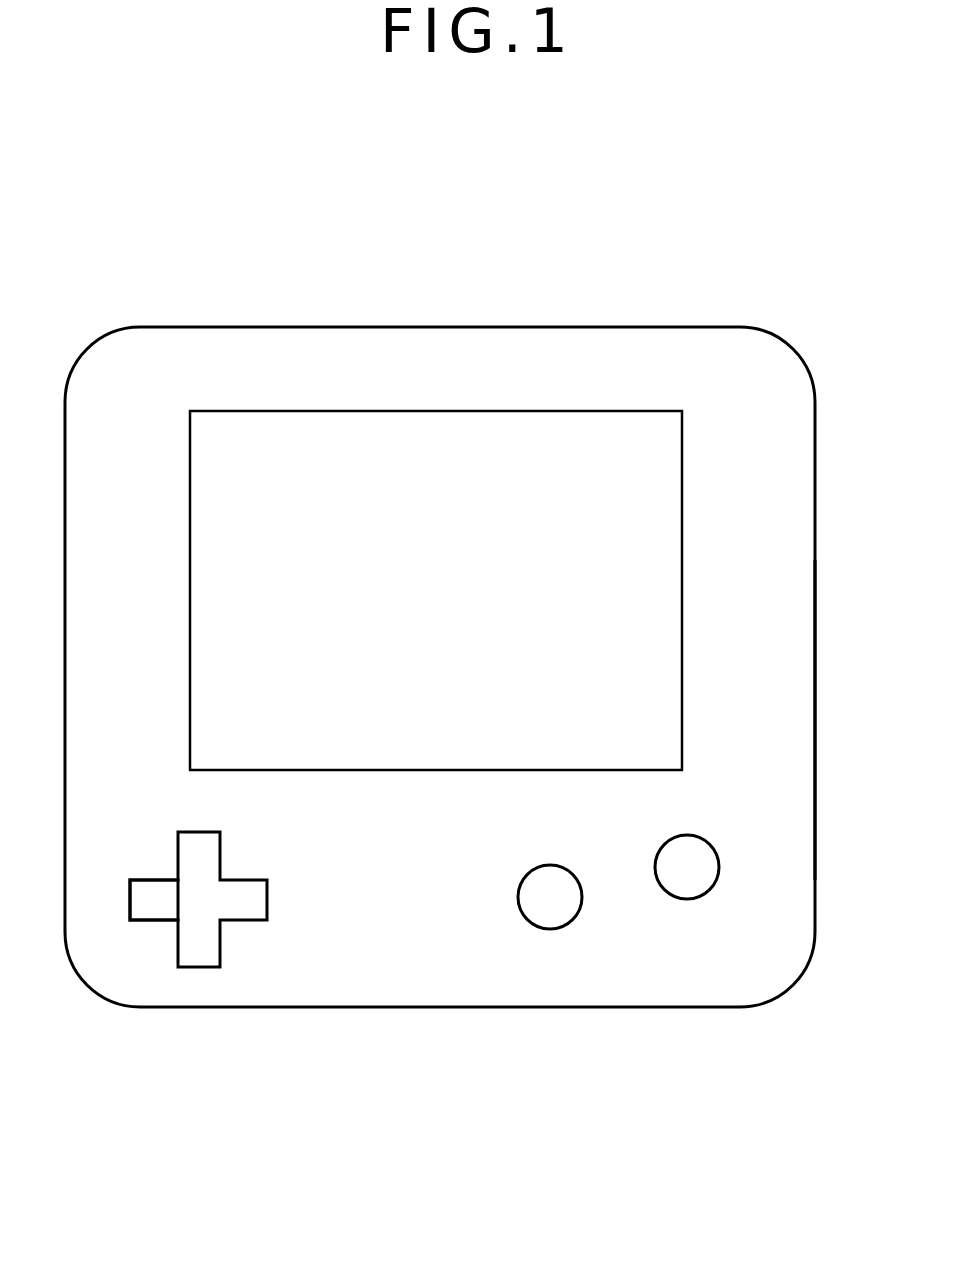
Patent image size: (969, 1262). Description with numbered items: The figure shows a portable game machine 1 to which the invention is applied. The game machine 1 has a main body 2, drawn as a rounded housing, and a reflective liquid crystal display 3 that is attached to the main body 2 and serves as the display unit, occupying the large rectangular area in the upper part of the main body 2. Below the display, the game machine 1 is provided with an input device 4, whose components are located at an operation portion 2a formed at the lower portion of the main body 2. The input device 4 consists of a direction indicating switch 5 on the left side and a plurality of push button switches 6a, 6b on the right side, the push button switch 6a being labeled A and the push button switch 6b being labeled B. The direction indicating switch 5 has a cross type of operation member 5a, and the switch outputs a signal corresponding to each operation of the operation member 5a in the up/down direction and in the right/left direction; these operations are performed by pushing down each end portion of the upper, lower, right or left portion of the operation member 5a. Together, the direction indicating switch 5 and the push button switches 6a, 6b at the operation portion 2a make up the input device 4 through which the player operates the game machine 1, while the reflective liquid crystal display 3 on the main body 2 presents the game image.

The game machine 1 is at (440, 693).
The main body 2 is at (158, 328).
The operation portion 2a is at (768, 862).
The reflective liquid crystal display 3 is at (663, 473).
The input device 4 is at (579, 1005).
The direction indicating switch 5 is at (278, 908).
The operation member 5a is at (153, 920).
The push button switch (A) 6a is at (691, 967).
The push button switch (B) 6b is at (545, 930).